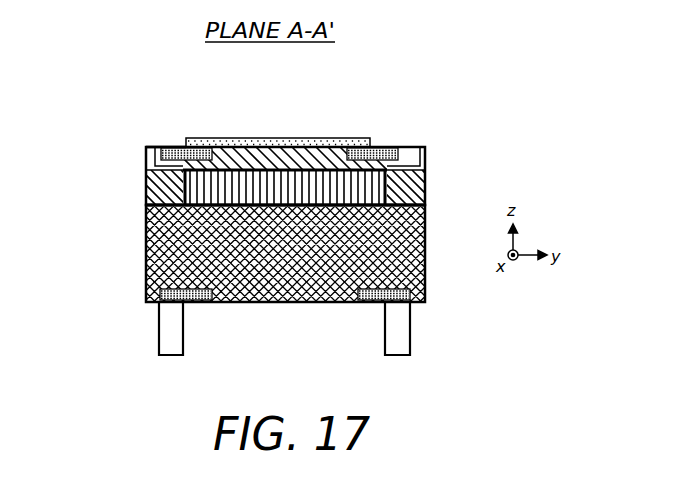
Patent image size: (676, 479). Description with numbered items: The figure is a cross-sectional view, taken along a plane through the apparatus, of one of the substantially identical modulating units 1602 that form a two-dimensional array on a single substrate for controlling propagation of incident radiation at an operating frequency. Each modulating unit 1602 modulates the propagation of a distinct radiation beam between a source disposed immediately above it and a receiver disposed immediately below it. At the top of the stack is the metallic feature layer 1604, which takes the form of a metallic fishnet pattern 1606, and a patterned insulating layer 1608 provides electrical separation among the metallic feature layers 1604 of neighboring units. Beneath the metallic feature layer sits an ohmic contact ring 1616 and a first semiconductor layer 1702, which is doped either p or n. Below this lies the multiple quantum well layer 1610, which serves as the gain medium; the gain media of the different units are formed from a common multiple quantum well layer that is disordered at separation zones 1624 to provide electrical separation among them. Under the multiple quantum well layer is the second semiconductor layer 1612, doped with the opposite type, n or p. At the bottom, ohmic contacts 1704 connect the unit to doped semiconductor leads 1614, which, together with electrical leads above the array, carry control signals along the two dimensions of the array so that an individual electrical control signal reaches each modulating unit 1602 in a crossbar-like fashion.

The modulating unit 1602 is at (493, 63).
The metallic feature layer 1604 is at (278, 116).
The metallic fishnet pattern 1606 is at (277, 141).
The patterned insulating layer 1608 is at (147, 164).
The multiple quantum well layer 1610 is at (300, 198).
The second semiconductor layer 1612 is at (300, 263).
The doped semiconductor lead 1614 is at (165, 333).
The ohmic contact ring 1616 is at (186, 140).
The separation zone 1624 is at (170, 197).
The first semiconductor layer 1702 is at (339, 146).
The ohmic contact 1704 is at (213, 304).